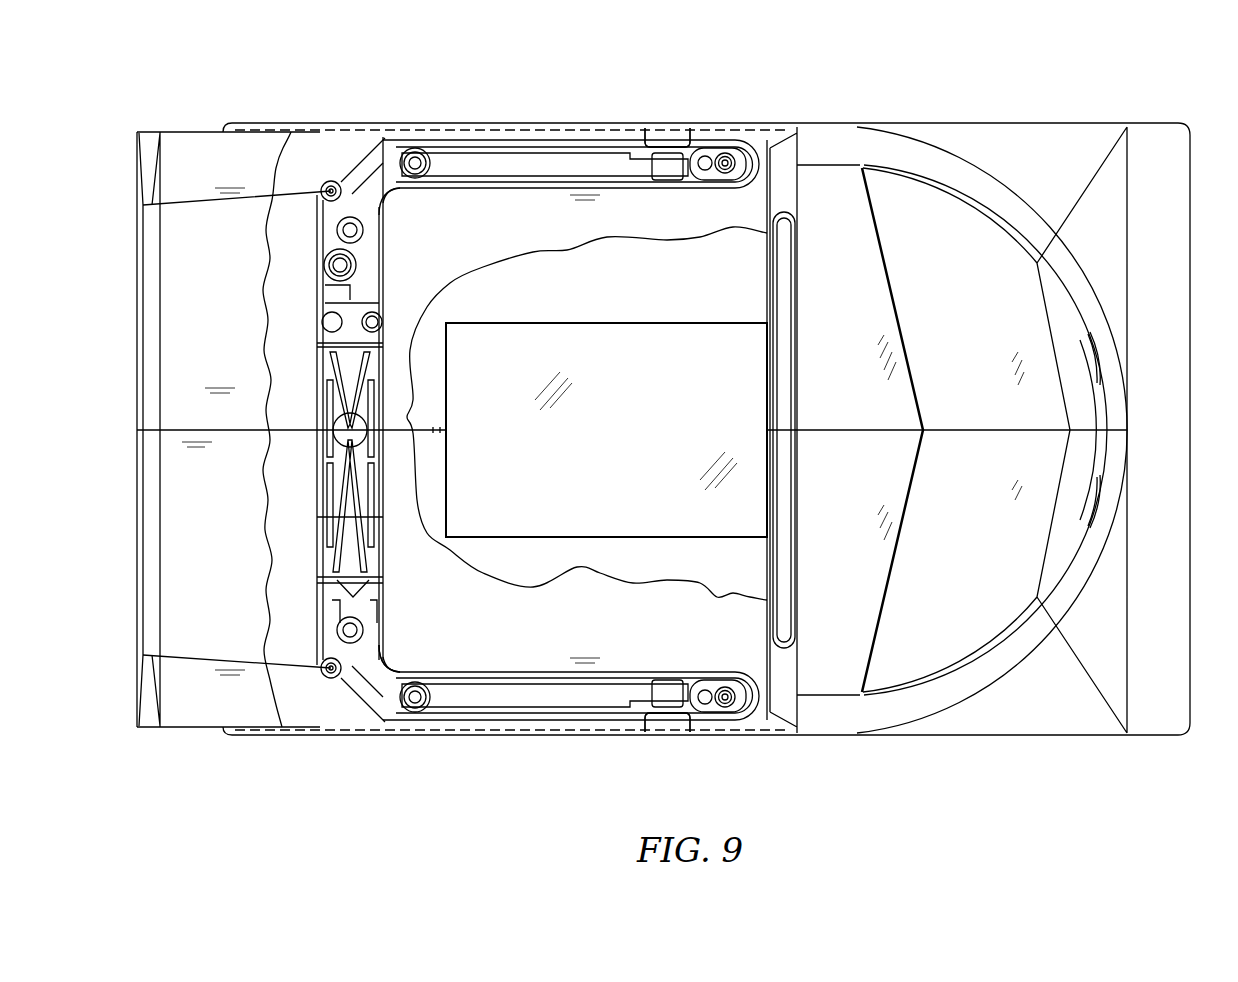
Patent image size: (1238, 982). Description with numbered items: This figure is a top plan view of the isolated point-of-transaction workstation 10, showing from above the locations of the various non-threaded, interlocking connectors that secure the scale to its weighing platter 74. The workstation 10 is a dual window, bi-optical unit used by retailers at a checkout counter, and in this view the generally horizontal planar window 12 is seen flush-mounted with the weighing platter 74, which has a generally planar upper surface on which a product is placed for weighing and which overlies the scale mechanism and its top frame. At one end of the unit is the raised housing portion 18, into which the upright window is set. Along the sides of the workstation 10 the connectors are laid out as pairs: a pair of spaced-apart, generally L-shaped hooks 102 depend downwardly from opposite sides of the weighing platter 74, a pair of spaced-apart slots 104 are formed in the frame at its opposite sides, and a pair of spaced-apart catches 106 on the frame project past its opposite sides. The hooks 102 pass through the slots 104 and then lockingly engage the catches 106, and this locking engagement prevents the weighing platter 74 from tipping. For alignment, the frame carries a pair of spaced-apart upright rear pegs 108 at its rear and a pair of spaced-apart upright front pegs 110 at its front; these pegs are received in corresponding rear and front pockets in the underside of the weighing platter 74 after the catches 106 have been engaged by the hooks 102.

The point-of-transaction workstation 10 is at (1050, 100).
The horizontal planar window 12 is at (613, 445).
The raised housing portion 18 is at (953, 145).
The weighing platter 74 is at (236, 538).
The hooks 102 is at (660, 138).
The slots 104 is at (662, 726).
The catches 106 is at (704, 142).
The alignment rear pegs 108 is at (332, 181).
The alignment front pegs 110 is at (728, 152).